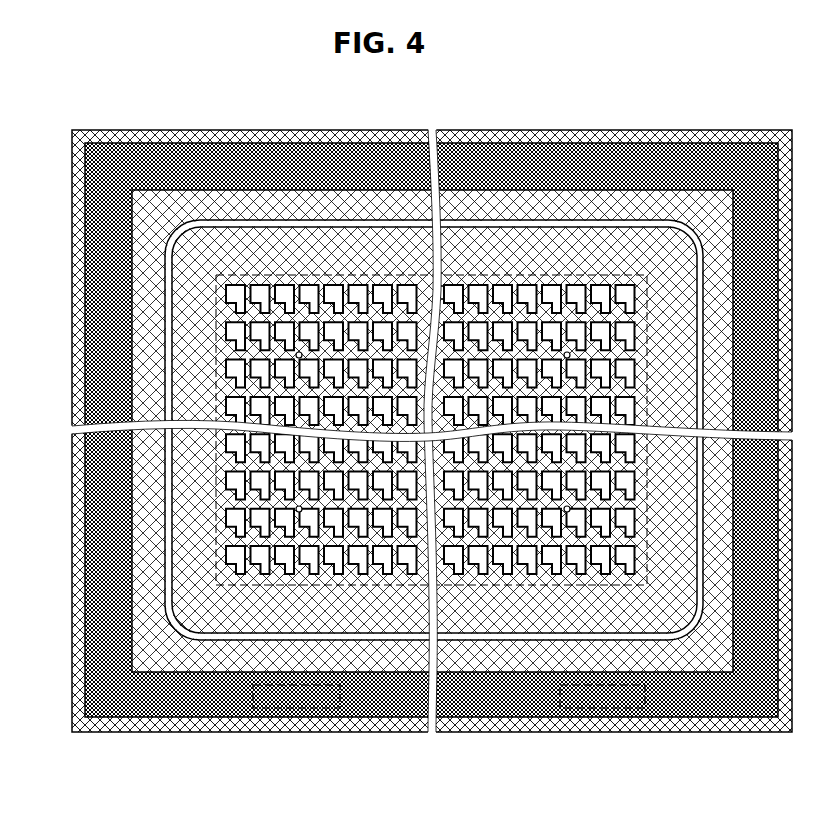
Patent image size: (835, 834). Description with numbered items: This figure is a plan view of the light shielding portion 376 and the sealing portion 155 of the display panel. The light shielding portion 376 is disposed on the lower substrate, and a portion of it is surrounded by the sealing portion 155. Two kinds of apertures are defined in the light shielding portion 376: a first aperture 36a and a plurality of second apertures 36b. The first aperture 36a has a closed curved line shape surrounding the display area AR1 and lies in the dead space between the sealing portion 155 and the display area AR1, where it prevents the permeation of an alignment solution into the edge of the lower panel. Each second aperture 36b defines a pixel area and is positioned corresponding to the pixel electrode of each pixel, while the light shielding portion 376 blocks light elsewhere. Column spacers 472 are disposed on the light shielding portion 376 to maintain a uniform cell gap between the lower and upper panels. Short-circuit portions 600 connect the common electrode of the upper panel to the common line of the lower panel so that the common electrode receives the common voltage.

The second aperture 36b is at (238, 290).
The column spacer 472 is at (296, 507).
The sealing portion 155 is at (128, 703).
The light shielding portion 376 is at (227, 610).
The short-circuit portion 600 is at (320, 707).
The first aperture 36a is at (380, 636).
The display area AR1 is at (487, 598).